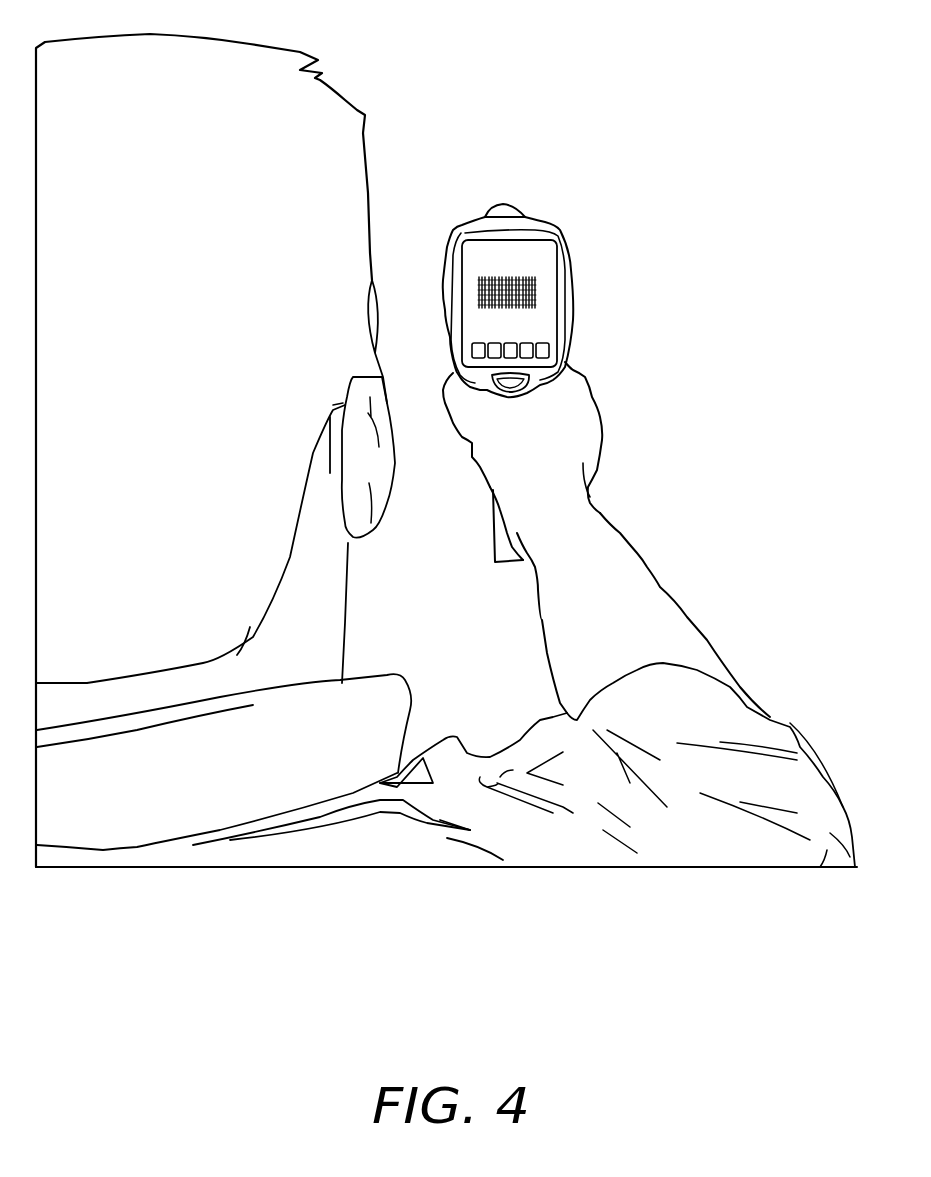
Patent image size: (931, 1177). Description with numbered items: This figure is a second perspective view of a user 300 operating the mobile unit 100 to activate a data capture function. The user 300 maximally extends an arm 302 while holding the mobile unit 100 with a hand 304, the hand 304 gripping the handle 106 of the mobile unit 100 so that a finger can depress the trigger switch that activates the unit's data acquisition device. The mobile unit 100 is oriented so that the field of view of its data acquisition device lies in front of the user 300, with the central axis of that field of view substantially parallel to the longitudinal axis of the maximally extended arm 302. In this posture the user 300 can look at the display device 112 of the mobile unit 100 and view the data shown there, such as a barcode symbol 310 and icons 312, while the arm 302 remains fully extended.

The user 300 is at (367, 75).
The mobile unit 100 is at (470, 222).
The display device 112 is at (525, 269).
The barcode symbol 310 is at (534, 283).
The icons 312 is at (550, 352).
The hand 304 is at (593, 398).
The arm 302 is at (655, 578).
The handle 106 is at (490, 520).